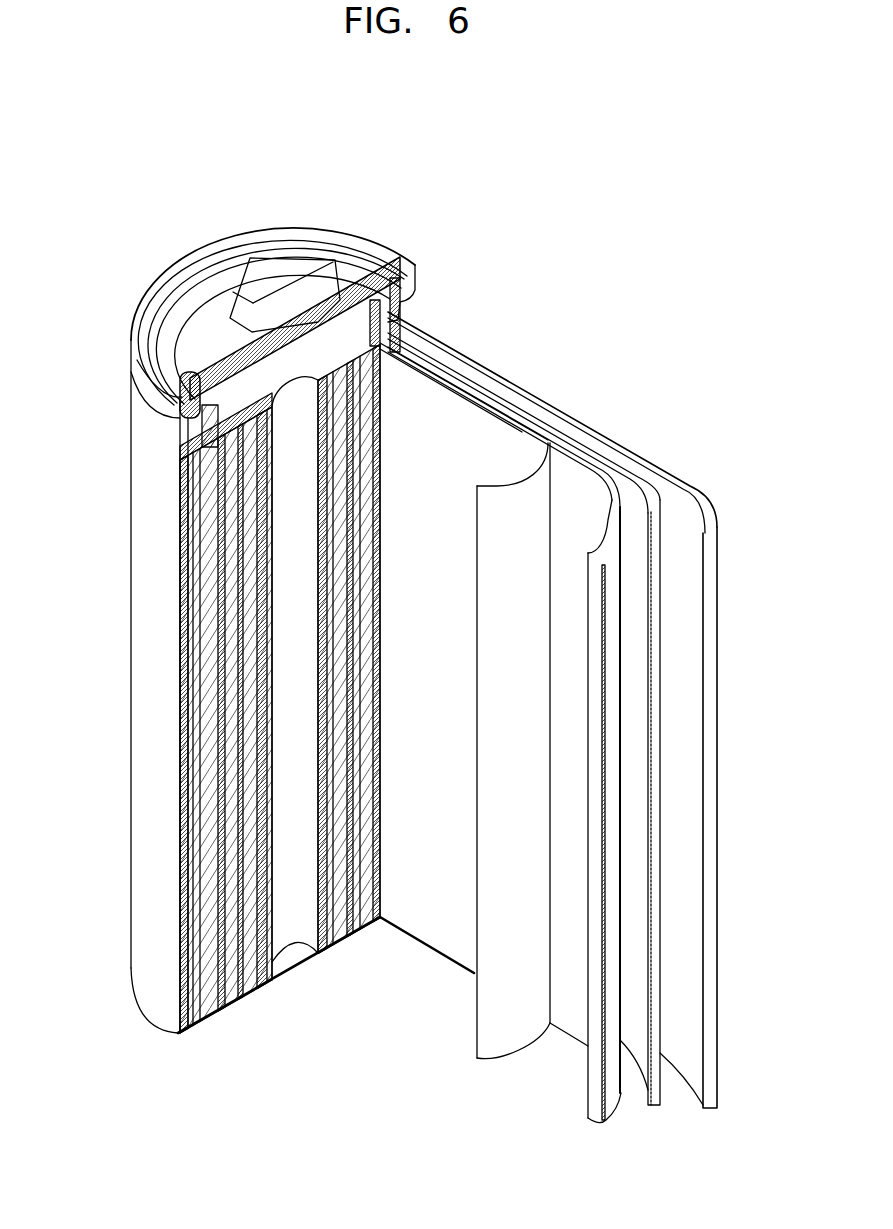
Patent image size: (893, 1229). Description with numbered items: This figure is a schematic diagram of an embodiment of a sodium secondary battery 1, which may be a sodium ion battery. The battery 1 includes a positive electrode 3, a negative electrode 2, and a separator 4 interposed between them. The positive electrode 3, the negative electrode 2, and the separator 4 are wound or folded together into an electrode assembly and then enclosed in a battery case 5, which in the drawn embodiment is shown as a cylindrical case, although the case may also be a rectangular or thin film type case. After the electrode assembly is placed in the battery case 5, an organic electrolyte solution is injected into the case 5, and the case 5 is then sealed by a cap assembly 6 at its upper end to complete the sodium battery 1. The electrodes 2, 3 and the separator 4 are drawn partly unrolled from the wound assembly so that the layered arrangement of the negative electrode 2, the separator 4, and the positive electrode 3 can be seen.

The sodium secondary battery 1 is at (568, 248).
The negative electrode 2 is at (690, 502).
The positive electrode 3 is at (612, 500).
The separator 4 is at (514, 404).
The battery case 5 is at (131, 680).
The cap assembly 6 is at (263, 275).